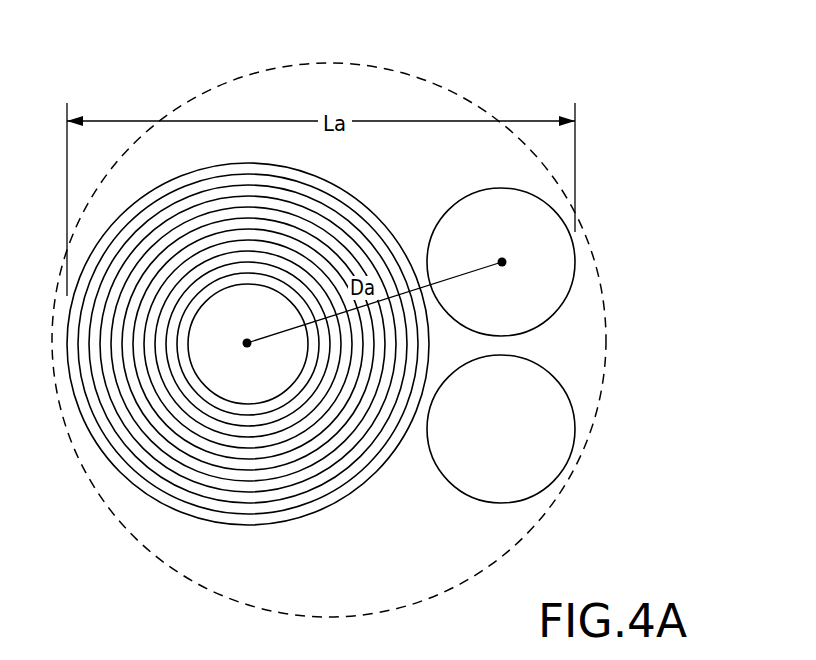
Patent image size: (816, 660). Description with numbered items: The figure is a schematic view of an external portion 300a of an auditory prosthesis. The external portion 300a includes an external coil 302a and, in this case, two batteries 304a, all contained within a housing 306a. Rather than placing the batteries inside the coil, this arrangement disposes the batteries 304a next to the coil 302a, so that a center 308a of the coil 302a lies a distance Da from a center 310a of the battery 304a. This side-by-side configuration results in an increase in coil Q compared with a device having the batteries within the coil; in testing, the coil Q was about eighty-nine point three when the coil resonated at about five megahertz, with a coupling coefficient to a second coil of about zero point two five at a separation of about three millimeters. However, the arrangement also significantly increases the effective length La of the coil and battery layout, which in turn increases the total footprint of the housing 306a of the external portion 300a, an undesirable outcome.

The external portion 300a is at (396, 320).
The external coil 302a is at (273, 478).
The batteries 304a is at (526, 322).
The housing 306a is at (606, 345).
The center of the coil 308a is at (243, 342).
The center of the battery 310a is at (506, 258).